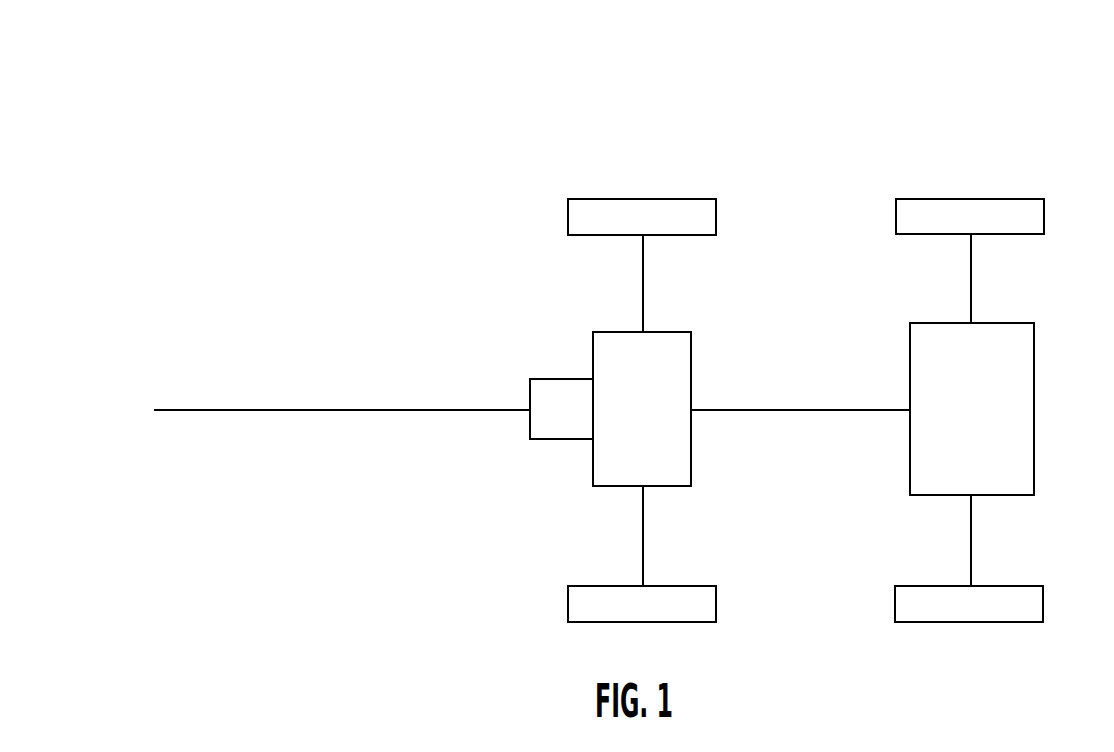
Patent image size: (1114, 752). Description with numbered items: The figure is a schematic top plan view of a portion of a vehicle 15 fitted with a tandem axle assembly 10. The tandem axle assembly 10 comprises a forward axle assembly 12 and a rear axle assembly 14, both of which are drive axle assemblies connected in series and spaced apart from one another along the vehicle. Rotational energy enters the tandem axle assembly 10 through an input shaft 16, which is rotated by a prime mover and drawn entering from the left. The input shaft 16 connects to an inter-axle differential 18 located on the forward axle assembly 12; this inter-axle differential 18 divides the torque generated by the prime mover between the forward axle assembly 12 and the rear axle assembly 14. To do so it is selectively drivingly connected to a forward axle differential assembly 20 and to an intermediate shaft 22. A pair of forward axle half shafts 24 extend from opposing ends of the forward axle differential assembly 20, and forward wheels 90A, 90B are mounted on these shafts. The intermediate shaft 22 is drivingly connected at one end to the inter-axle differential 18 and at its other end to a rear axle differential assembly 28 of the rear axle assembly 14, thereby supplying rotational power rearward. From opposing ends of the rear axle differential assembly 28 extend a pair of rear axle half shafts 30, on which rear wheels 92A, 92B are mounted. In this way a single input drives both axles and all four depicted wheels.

The tandem axle assembly 10 is at (1022, 105).
The forward axle assembly 12 is at (547, 291).
The rear axle assembly 14 is at (873, 305).
The vehicle 15 is at (352, 90).
The input shaft 16 is at (330, 410).
The inter-axle differential 18 is at (546, 440).
The forward axle differential assembly 20 is at (691, 458).
The intermediate shaft 22 is at (773, 407).
The forward axle half shafts 24 is at (643, 285).
The rear axle differential assembly 28 is at (1034, 420).
The rear axle half shafts 30 is at (971, 285).
The forward wheel 90A is at (640, 199).
The forward wheel 90B is at (636, 622).
The rear wheel 92A is at (1003, 199).
The rear wheel 92B is at (970, 622).